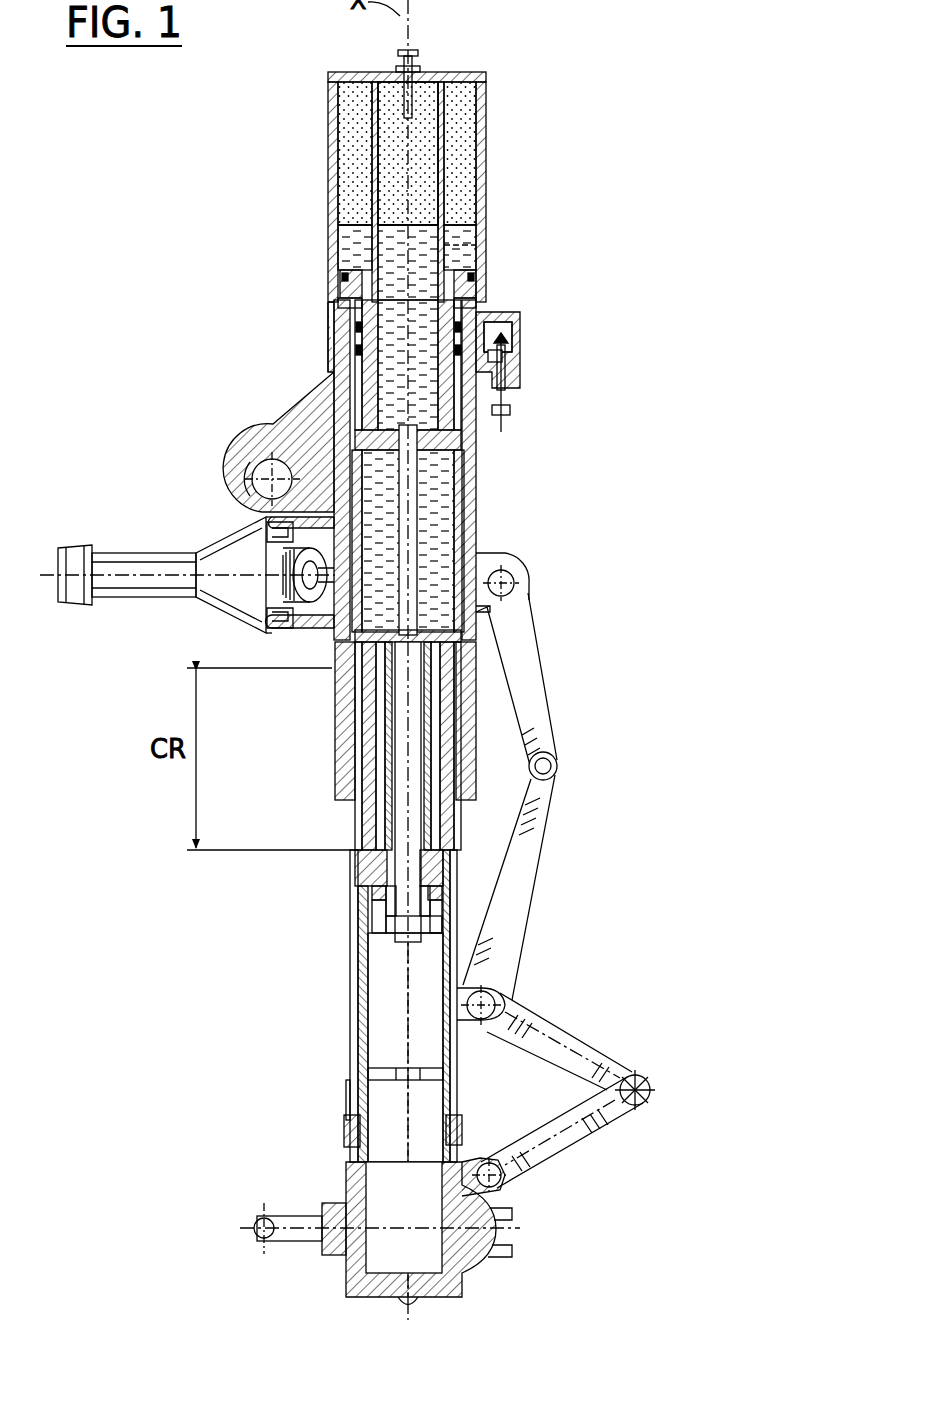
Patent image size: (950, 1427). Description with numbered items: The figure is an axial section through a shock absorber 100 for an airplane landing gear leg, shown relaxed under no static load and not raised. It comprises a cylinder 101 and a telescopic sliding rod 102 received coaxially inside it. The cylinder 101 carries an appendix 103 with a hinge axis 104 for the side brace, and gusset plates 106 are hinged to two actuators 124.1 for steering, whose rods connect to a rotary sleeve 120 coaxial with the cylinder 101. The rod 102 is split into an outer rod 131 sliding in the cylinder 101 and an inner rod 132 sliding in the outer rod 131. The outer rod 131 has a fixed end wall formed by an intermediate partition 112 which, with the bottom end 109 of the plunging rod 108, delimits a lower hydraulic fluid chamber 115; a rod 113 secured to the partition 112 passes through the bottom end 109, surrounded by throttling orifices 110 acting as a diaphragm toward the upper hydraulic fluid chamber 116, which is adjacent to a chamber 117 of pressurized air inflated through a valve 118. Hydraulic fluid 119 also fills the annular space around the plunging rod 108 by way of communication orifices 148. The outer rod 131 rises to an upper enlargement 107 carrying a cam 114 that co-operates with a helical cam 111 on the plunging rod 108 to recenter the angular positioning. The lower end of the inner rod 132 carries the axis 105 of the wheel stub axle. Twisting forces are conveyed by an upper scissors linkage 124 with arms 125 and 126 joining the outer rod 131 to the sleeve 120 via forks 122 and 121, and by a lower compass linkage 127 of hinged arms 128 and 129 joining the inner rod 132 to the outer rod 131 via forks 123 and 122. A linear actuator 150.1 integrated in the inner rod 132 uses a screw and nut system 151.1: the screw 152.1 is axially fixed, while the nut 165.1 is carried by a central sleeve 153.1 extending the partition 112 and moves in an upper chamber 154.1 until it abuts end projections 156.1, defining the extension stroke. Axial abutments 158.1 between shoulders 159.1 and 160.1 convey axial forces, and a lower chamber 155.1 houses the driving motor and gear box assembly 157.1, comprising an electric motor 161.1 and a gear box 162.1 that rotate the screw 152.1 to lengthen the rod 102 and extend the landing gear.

The shock absorber 100 is at (580, 158).
The cylinder 101 is at (492, 178).
The rod 102 is at (350, 966).
The appendix 103 is at (305, 398).
The hinge axis 104 is at (250, 498).
The axis 105 is at (470, 1262).
The gusset plates 106 is at (300, 630).
The upper enlargement 107 is at (342, 278).
The plunging rod 108 is at (365, 183).
The bottom end 109 is at (315, 412).
The throttling orifices 110 is at (462, 452).
The helical cam 111 is at (478, 432).
The intermediate partition 112 is at (472, 645).
The rod 113 is at (432, 490).
The cam 114 is at (472, 375).
The lower hydraulic fluid chamber 115 is at (445, 537).
The upper hydraulic fluid chamber 116 is at (388, 338).
The gas chamber 117 is at (385, 140).
The valve 118 is at (418, 60).
The hydraulic fluid 119 is at (355, 243).
The rotary sleeve 120 is at (497, 558).
The fork 121 is at (492, 612).
The fork 122 is at (476, 1020).
The fork 123 is at (500, 1190).
The upper scissors linkage 124 is at (558, 768).
The actuators 124.1 is at (146, 560).
The scissors linkage arm 125 is at (542, 702).
The scissors linkage arm 126 is at (528, 868).
The lower compass linkage 127 is at (642, 1065).
The hinged arm 128 is at (552, 1048).
The hinged arm 129 is at (582, 1128).
The outer rod 131 is at (355, 1042).
The inner rod 132 is at (352, 1160).
The communication orifices 148 is at (455, 245).
The linear actuator 150.1 is at (350, 1082).
The screw and nut system 151.1 is at (350, 836).
The screw 152.1 is at (465, 717).
The central sleeve 153.1 is at (425, 706).
The upper chamber 154.1 is at (374, 760).
The lower chamber 155.1 is at (432, 1075).
The end projections 156.1 is at (356, 662).
The driving motor and gear box assembly 157.1 is at (352, 1130).
The axial abutments 158.1 is at (386, 910).
The shoulder 159.1 is at (445, 890).
The shoulder 160.1 is at (440, 925).
The electric motor 161.1 is at (458, 1123).
The gear box 162.1 is at (405, 1005).
The nut 165.1 is at (455, 866).